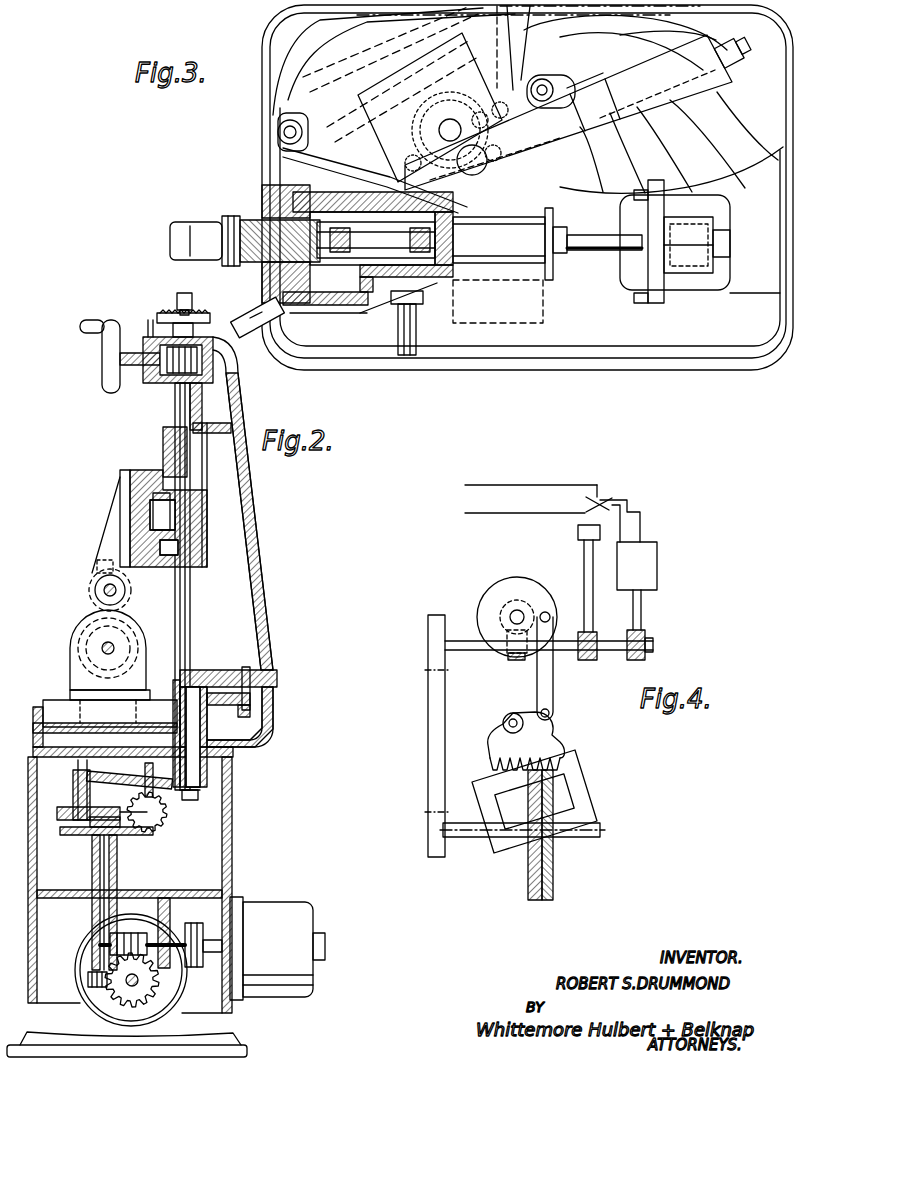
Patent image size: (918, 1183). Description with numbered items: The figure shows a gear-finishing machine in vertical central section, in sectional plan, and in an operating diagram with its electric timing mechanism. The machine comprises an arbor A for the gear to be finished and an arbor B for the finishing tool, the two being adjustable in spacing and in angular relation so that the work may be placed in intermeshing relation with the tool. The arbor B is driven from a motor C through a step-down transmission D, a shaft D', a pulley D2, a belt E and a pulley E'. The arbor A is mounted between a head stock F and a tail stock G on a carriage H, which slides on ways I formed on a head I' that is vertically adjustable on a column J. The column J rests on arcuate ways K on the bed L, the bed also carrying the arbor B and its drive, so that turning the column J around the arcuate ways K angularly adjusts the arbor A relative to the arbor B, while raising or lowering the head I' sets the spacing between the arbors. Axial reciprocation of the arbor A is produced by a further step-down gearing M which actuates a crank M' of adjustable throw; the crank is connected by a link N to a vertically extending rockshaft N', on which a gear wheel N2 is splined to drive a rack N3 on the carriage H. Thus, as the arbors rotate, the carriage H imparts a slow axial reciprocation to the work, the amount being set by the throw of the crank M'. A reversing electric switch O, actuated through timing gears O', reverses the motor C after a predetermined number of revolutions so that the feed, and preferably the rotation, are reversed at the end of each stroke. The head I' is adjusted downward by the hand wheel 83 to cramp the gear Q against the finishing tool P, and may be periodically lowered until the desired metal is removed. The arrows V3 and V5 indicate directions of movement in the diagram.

In FIG. 2, the hand wheel 83 is at (102, 360).
In FIG. 2, the arbor A is at (118, 592).
In FIG. 4, the arbor A is at (557, 815).
In FIG. 3, the arbor B is at (540, 228).
In FIG. 2, the arbor B is at (114, 650).
In FIG. 4, the arbor B is at (560, 845).
In FIG. 2, the motor C is at (290, 905).
In FIG. 2, the step-down transmission D is at (161, 910).
In FIG. 4, the step-down transmission D is at (647, 661).
In FIG. 2, the shaft D' is at (156, 981).
In FIG. 4, the shaft D' is at (549, 664).
In FIG. 4, the pulley D2 is at (428, 641).
In FIG. 2, the belt E is at (127, 907).
In FIG. 4, the belt E is at (403, 691).
In FIG. 3, the pulley E' is at (337, 229).
In FIG. 4, the pulley E' is at (413, 846).
In FIG. 2, the head stock F is at (118, 533).
In FIG. 4, the head stock F is at (497, 858).
In FIG. 4, the tail stock G is at (580, 818).
In FIG. 3, the carriage H is at (637, 84).
In FIG. 2, the carriage H is at (140, 478).
In FIG. 2, the ways I is at (163, 451).
In FIG. 2, the head I' is at (186, 506).
In FIG. 3, the column J is at (440, 58).
In FIG. 2, the column J is at (250, 474).
In FIG. 3, the arcuate ways K is at (738, 160).
In FIG. 2, the arcuate ways K is at (268, 676).
In FIG. 3, the bed L is at (768, 194).
In FIG. 2, the bed L is at (273, 705).
In FIG. 4, the step-down gearing M is at (517, 633).
In FIG. 4, the crank M' is at (557, 592).
In FIG. 4, the link N is at (559, 668).
In FIG. 4, the rockshaft N' is at (492, 722).
In FIG. 4, the gear wheel N2 is at (545, 745).
In FIG. 3, the rack N3 is at (580, 138).
In FIG. 4, the rack N3 is at (553, 765).
In FIG. 4, the reversing electric switch O is at (655, 566).
In FIG. 4, the timing gears O' is at (594, 660).
In FIG. 2, the finishing tool P is at (72, 640).
In FIG. 2, the gear Q is at (93, 590).
In FIG. 4, the gear Q is at (548, 850).
In FIG. 4, the direction arrow V3 is at (526, 860).
In FIG. 4, the direction arrow V5 is at (518, 825).